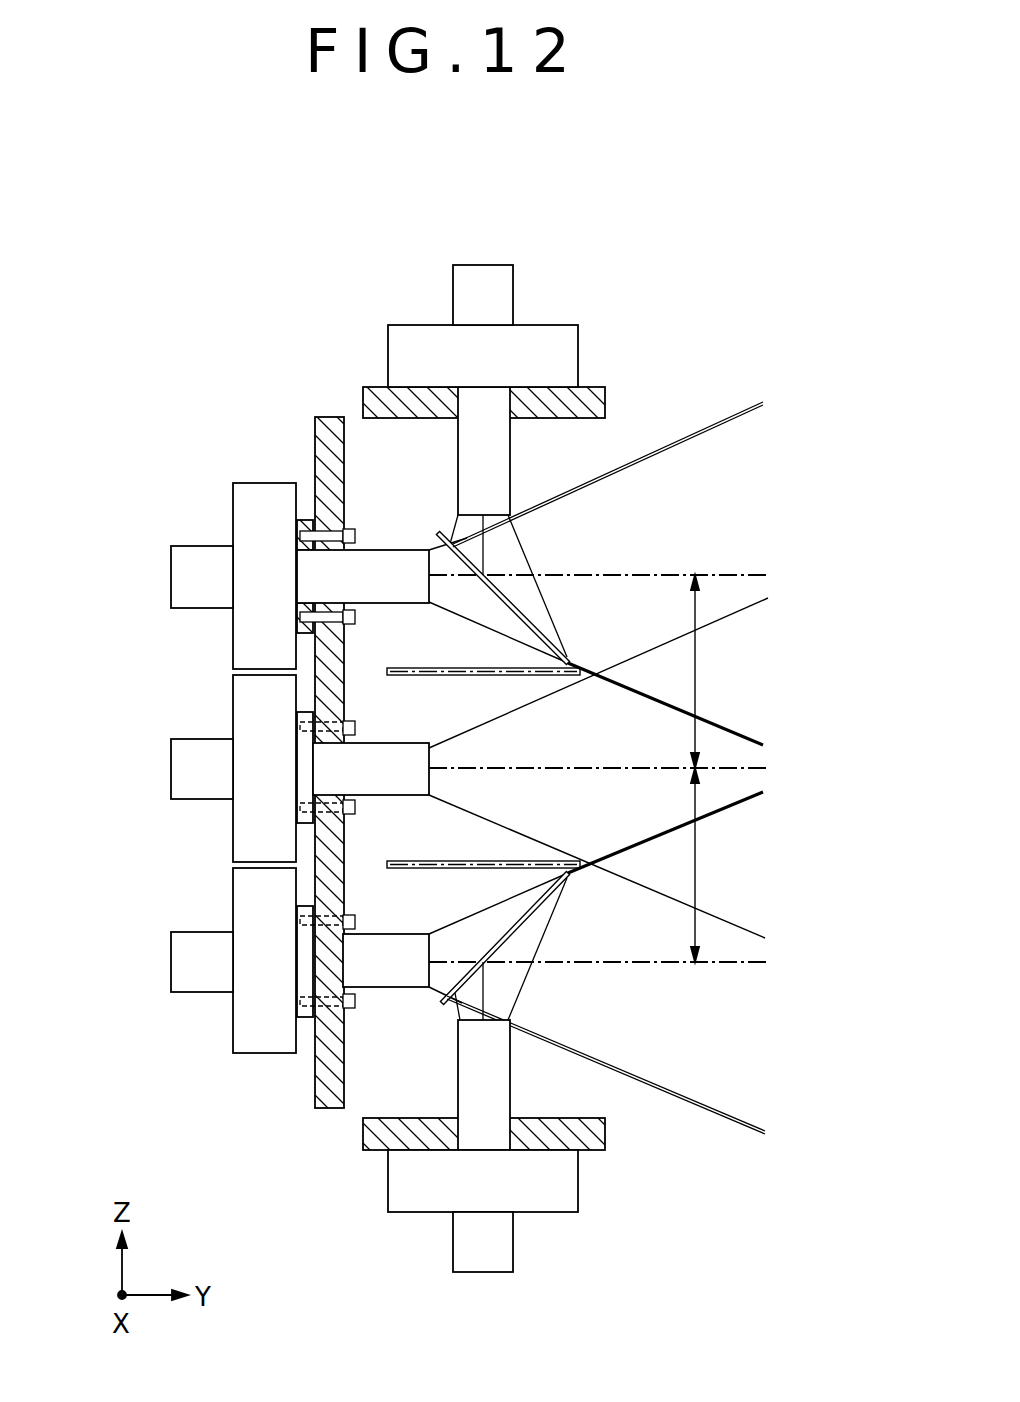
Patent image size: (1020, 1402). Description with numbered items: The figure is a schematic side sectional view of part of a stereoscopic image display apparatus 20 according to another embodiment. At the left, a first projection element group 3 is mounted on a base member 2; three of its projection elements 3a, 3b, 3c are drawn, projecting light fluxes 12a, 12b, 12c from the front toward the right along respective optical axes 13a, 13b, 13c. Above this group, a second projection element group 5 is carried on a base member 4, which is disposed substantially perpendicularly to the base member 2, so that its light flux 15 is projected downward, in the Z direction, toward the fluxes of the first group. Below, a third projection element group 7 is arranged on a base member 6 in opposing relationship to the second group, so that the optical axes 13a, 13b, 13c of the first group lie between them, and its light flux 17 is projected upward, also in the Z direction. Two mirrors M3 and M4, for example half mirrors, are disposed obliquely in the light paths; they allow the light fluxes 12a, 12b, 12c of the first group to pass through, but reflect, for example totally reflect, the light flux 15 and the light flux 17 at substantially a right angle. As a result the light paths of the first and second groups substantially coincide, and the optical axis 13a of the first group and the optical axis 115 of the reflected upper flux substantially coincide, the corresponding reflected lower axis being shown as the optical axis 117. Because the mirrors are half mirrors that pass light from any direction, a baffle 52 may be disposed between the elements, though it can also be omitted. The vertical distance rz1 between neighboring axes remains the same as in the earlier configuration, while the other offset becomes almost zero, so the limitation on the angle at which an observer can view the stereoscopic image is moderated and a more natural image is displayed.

The stereoscopic image display apparatus 20 is at (443, 240).
The base member 2 is at (316, 440).
The first projection element group 3 is at (243, 768).
The projection element 3a is at (171, 578).
The projection element 3b is at (171, 770).
The projection element 3c is at (270, 960).
The base member 4 is at (363, 390).
The second projection element group 5 is at (513, 286).
The base member 6 is at (363, 1138).
The third projection element group 7 is at (513, 1248).
The light flux 12a is at (459, 597).
The light flux 12b is at (459, 790).
The light flux 12c is at (442, 975).
The optical axis 13a is at (768, 600).
The optical axis 13b is at (592, 772).
The optical axis 13c is at (752, 965).
The light flux 15 is at (706, 429).
The light flux 17 is at (717, 1112).
The baffle 52 is at (428, 678).
The optical axis 115 is at (752, 573).
The optical axis 117 is at (762, 962).
The mirror M3 is at (439, 532).
The mirror M4 is at (495, 940).
The distance rz1 is at (716, 768).